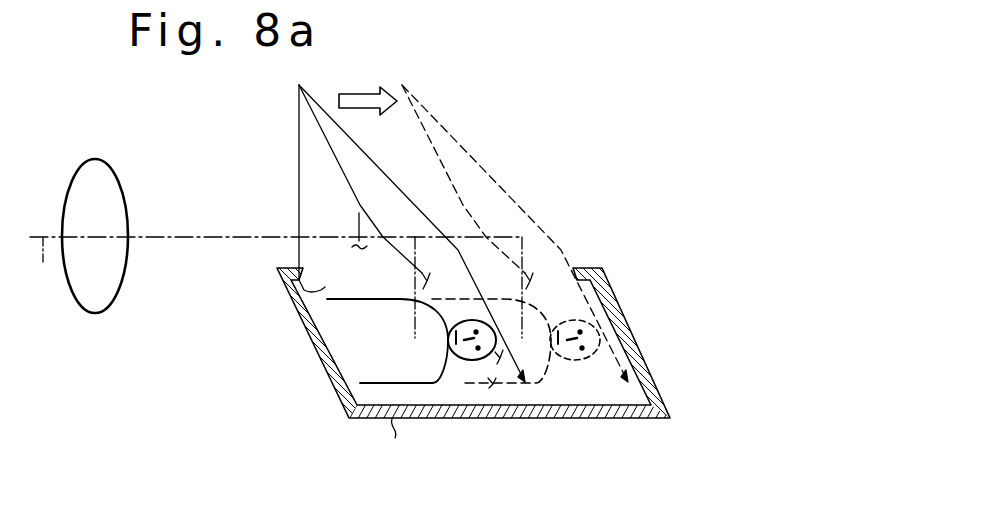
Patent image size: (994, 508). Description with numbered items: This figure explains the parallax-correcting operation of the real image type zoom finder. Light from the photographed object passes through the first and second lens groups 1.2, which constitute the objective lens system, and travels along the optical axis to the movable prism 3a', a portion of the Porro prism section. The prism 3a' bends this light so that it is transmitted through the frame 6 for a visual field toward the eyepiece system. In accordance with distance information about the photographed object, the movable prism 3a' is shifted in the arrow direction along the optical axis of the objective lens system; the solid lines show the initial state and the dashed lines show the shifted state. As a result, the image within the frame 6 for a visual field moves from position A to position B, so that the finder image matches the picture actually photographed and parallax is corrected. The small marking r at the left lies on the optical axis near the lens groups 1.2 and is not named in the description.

The movable prism 3a' is at (463, 218).
The first and second lens groups 1.2 is at (110, 305).
The position A is at (389, 387).
The position B is at (542, 390).
The frame for a visual field 6 is at (597, 419).
The radius / offset distance r is at (39, 260).